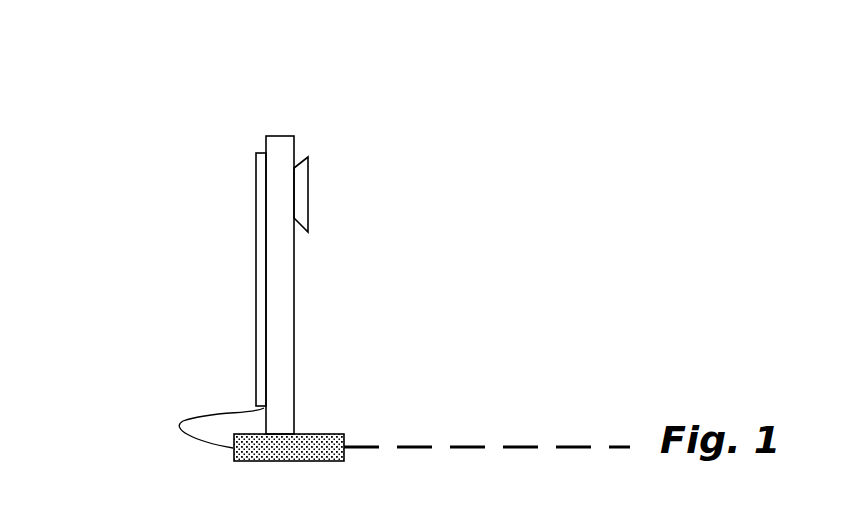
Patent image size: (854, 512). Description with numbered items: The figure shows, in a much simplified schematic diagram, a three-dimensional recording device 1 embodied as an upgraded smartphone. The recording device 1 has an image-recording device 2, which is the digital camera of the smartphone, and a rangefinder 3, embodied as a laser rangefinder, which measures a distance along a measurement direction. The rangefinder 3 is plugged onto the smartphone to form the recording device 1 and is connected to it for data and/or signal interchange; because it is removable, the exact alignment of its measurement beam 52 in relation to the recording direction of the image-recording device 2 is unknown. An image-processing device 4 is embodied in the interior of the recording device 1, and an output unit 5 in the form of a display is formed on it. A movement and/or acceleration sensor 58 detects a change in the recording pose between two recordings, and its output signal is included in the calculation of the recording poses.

The 3D recording device 1 is at (139, 95).
The image-recording device 2 is at (362, 176).
The rangefinder 3 is at (268, 452).
The image-processing device 4 is at (274, 302).
The output unit 5 is at (258, 222).
The movement and/or acceleration sensor 58 is at (262, 343).
The measurement beam 52 is at (413, 445).